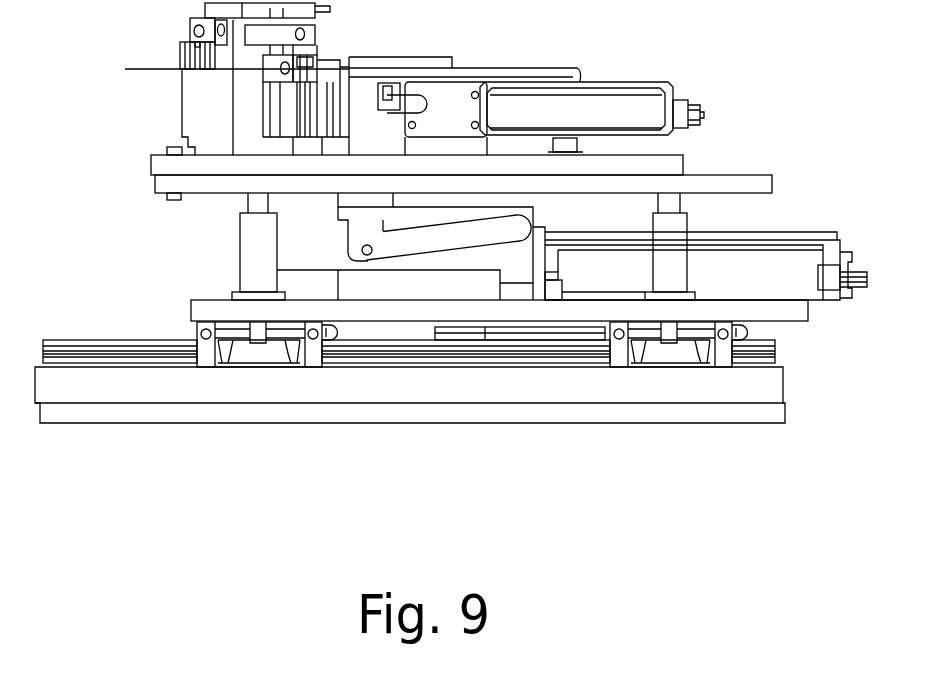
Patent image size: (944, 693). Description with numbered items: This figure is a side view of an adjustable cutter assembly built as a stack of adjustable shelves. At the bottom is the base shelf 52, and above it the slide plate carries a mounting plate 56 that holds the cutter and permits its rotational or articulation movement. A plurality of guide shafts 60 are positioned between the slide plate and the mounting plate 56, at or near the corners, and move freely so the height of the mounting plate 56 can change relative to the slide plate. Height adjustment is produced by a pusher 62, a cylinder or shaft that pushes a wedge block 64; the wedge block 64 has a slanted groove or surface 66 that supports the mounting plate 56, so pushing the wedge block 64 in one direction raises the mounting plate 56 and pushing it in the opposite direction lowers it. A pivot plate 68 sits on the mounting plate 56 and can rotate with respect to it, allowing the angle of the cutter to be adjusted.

The base shelf 52 is at (777, 413).
The mounting plate 56 is at (760, 183).
The guide shafts 60 is at (260, 253).
The pusher 62 is at (547, 285).
The wedge block 64 is at (523, 292).
The slanted groove or surface 66 is at (445, 244).
The pivot plate 68 is at (160, 163).